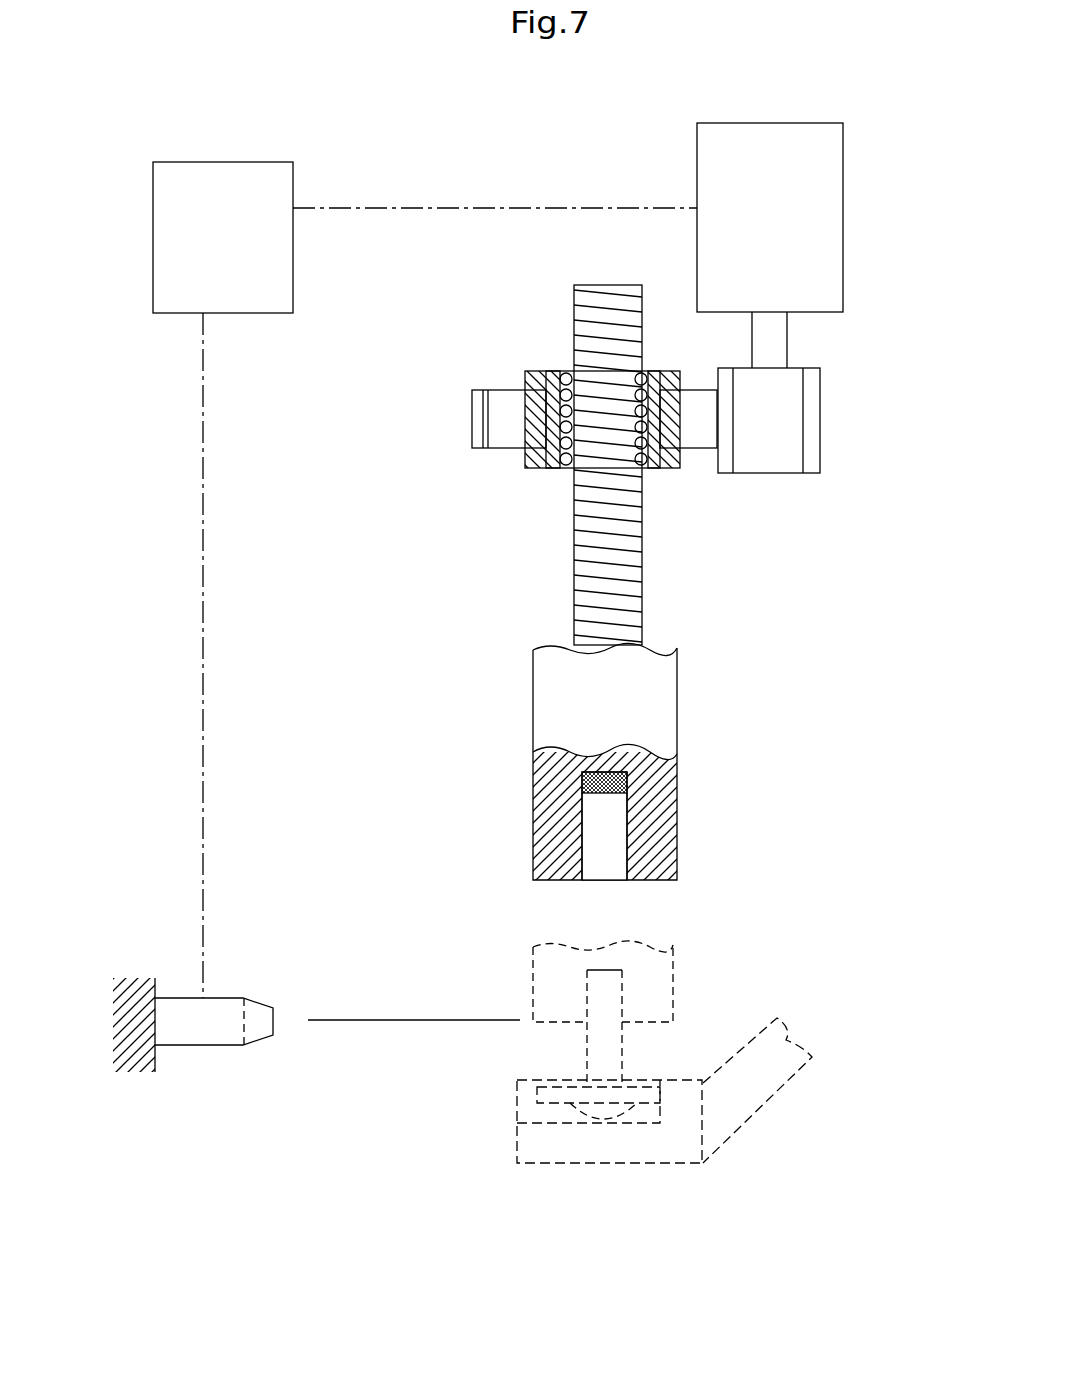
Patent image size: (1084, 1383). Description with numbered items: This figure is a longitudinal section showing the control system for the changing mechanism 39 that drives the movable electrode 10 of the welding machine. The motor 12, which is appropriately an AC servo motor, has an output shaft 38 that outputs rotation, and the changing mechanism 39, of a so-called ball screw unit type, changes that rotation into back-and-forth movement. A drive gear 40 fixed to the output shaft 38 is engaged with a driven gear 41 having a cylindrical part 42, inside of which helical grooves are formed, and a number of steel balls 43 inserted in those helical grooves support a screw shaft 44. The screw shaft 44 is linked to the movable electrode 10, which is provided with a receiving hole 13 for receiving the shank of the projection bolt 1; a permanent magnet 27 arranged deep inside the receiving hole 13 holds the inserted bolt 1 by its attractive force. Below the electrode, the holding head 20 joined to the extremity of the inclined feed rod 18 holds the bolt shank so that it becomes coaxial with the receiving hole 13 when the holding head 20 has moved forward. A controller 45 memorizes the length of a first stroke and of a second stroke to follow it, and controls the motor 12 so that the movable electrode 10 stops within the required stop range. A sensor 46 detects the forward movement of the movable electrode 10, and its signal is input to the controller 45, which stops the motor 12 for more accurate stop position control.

The projection bolt 1 is at (567, 1055).
The movable electrode 10 is at (678, 702).
The motor 12 is at (843, 197).
The receiving hole 13 is at (600, 870).
The feed rod 18 is at (773, 1095).
The holding head 20 is at (569, 1176).
The permanent magnet 27 is at (608, 795).
The output shaft 38 is at (790, 345).
The changing mechanism 39 is at (678, 502).
The drive gear 40 is at (792, 422).
The driven gear 41 is at (472, 422).
The cylindrical part 42 is at (560, 371).
The steel balls 43 is at (543, 464).
The screw shaft 44 is at (570, 578).
The controller 45 is at (240, 252).
The sensor 46 is at (223, 998).